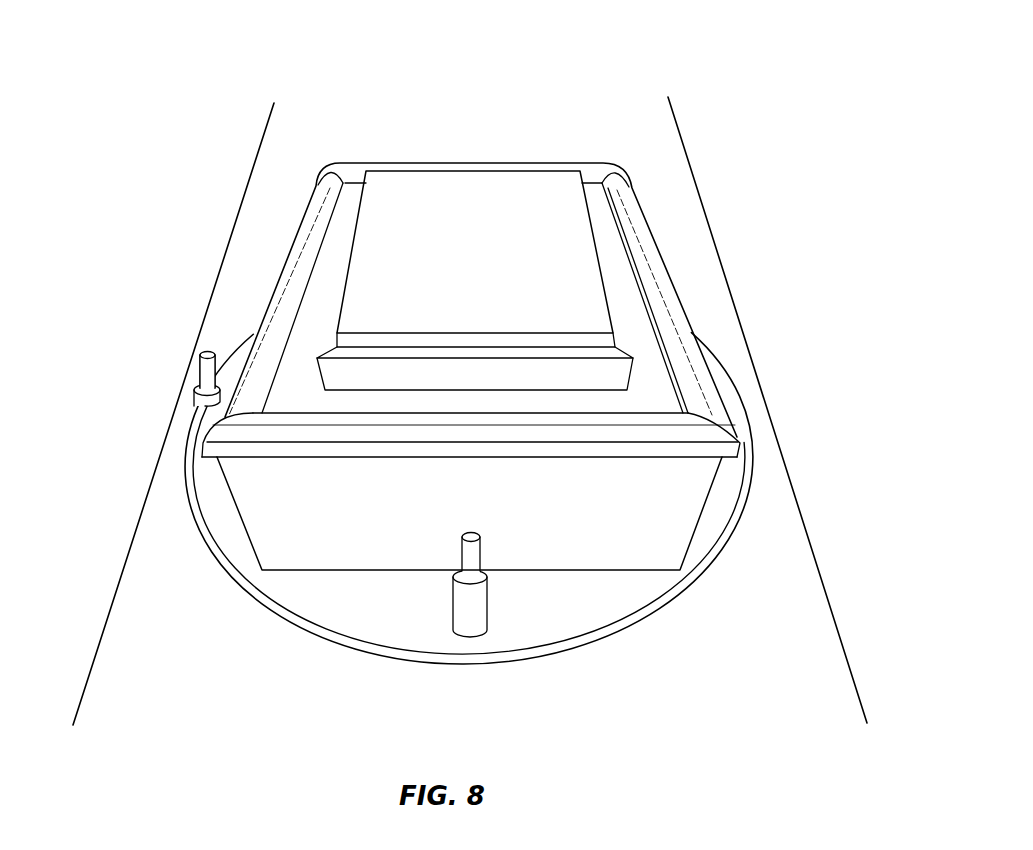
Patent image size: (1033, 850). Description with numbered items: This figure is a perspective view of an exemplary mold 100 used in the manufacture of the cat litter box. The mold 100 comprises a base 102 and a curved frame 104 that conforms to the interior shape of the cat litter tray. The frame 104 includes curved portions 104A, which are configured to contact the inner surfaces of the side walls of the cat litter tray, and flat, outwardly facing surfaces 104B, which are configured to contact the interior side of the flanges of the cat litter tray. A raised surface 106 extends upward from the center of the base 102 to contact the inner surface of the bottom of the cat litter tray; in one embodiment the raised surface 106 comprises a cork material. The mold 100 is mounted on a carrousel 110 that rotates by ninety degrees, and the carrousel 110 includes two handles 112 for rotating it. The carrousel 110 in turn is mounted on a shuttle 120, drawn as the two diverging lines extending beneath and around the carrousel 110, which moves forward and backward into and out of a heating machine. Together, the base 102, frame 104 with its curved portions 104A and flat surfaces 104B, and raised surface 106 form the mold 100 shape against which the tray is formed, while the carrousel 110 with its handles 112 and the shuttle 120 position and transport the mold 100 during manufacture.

The mold 100 is at (537, 105).
The base 102 is at (560, 522).
The curved frame 104 is at (305, 216).
The curved portions 104A is at (270, 292).
The flat, outwardly facing surfaces 104B is at (298, 450).
The raised surface 106 is at (452, 271).
The carrousel 110 is at (358, 652).
The handles 112 is at (198, 407).
The shuttle 120 is at (696, 652).